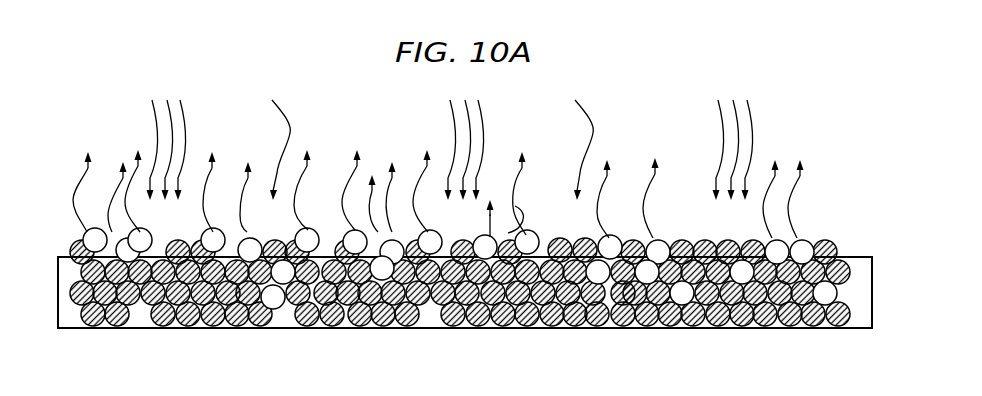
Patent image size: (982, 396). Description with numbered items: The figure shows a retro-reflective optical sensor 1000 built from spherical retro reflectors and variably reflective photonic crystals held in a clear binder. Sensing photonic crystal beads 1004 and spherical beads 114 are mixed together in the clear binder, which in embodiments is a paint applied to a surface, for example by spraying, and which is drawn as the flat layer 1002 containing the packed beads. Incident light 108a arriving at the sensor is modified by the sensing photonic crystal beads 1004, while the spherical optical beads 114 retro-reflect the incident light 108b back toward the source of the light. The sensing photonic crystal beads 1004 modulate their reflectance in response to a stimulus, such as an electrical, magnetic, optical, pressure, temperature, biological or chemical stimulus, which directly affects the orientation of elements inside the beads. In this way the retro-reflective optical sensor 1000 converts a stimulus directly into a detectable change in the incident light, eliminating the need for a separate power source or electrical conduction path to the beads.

The incident light 108a is at (197, 133).
The incident light 108b is at (110, 232).
The spherical beads 114 is at (358, 233).
The retro-reflective optical sensor 1000 is at (468, 283).
The substrate / matrix 1002 is at (857, 320).
The sensing photonic crystal beads 1004 is at (472, 320).